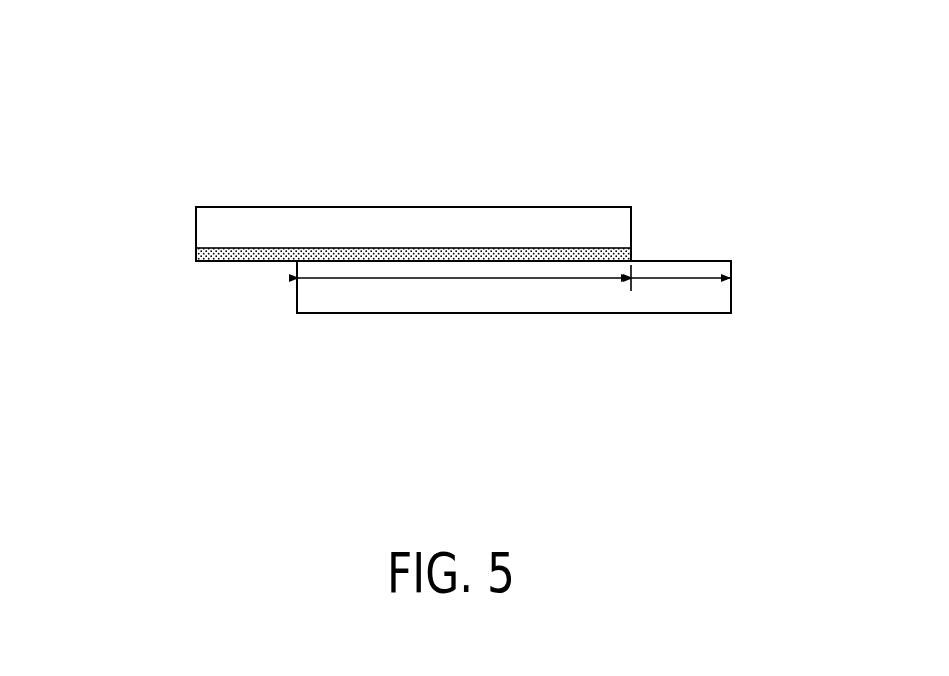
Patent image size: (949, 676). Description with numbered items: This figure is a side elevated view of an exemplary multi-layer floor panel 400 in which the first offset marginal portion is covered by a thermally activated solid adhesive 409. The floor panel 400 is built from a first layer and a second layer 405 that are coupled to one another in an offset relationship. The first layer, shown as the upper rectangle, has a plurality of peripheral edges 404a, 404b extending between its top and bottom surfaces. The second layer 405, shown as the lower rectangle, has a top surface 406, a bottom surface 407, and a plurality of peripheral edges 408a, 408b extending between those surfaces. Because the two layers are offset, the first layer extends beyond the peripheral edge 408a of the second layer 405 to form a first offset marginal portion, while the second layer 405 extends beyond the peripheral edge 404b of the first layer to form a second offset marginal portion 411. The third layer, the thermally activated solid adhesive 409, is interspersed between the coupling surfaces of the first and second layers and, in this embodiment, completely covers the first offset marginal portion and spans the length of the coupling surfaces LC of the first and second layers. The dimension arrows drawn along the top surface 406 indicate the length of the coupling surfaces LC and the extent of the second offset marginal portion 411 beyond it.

The floor panel 400 is at (300, 152).
The peripheral edge of first layer 404a is at (143, 238).
The peripheral edge of first layer 404b is at (656, 211).
The top surface of second layer 406 is at (705, 261).
The thermally activated solid adhesive 409 is at (215, 286).
The peripheral edge of second layer 408a is at (275, 289).
The peripheral edge of second layer 408b is at (745, 288).
The bottom surface of second layer 407 is at (603, 316).
The length of the coupling surfaces LC is at (462, 278).
The second offset marginal portion 411 is at (682, 278).
The second layer 405 is at (497, 400).